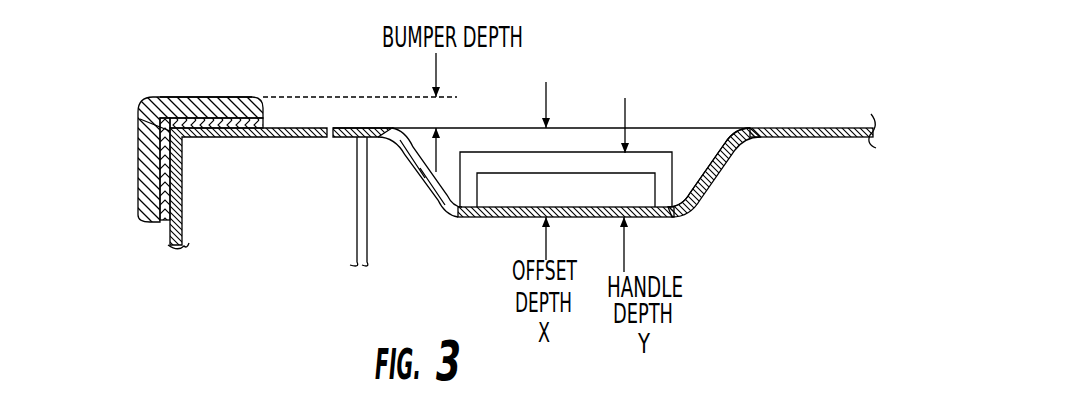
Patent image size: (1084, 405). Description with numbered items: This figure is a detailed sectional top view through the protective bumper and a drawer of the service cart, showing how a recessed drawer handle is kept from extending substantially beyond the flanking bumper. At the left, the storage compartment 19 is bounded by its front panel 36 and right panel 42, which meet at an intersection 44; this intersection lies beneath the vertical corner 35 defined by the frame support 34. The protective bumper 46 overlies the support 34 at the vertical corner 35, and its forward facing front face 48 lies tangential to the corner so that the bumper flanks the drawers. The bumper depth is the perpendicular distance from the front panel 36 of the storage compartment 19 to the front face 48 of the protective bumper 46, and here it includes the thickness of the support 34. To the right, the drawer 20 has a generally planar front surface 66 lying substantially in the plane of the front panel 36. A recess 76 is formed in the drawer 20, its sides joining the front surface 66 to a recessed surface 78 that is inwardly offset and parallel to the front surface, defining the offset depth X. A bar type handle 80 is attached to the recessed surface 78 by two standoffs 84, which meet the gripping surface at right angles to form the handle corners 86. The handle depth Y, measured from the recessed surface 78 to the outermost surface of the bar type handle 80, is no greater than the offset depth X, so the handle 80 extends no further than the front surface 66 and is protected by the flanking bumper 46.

The storage compartment 19 is at (267, 262).
The drawer 20 is at (842, 162).
The support 34 is at (232, 98).
The vertical corner 35 is at (140, 120).
The front panel 36 is at (315, 128).
The right panel 42 is at (168, 240).
The intersection 44 is at (192, 137).
The protective bumper 46 is at (147, 99).
The front face 48 is at (185, 97).
The front surface 66 is at (733, 128).
The recess 76 is at (710, 152).
The recessed surface 78 is at (513, 206).
The bar type handle 80 is at (647, 160).
The standoff 84 is at (687, 205).
The handle corner 86 is at (672, 152).